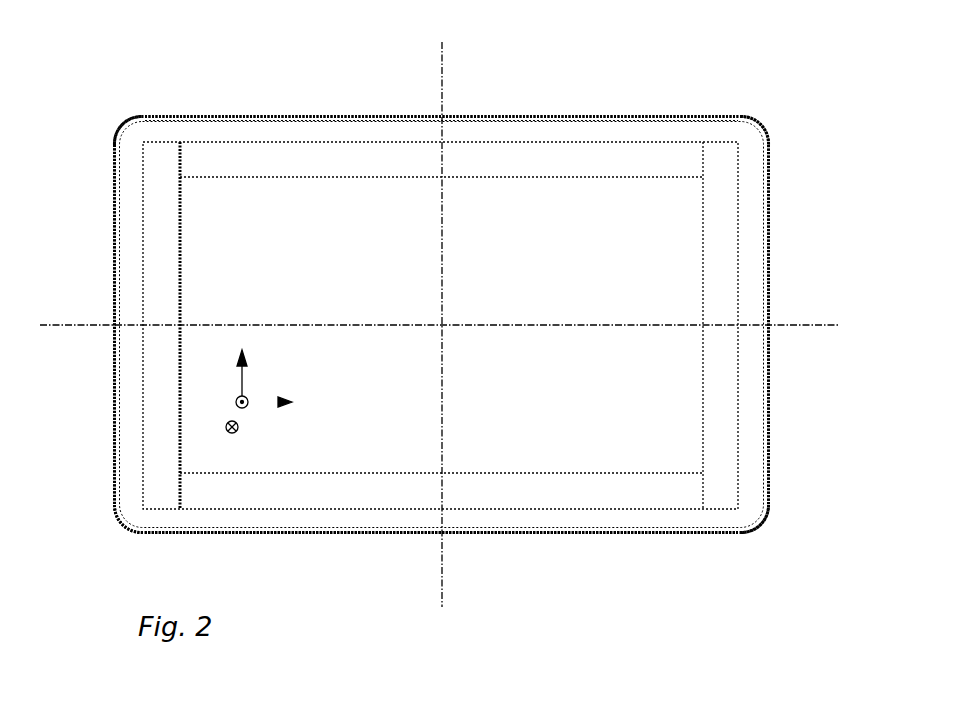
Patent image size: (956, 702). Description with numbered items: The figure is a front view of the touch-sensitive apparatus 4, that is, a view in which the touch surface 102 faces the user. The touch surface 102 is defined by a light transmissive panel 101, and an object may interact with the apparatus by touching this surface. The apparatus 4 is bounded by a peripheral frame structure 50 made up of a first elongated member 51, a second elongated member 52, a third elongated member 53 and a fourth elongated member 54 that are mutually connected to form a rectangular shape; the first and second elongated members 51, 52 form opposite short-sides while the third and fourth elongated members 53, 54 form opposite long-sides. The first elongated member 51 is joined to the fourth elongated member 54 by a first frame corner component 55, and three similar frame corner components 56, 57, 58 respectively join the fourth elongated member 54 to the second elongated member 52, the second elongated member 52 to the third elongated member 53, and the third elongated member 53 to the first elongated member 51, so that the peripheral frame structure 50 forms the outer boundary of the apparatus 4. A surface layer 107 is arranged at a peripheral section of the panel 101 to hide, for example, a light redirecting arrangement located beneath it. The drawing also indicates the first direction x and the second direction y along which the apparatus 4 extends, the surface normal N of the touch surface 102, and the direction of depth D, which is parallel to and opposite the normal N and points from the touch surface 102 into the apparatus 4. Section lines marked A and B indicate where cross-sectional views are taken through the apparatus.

The touch-sensitive apparatus 4 is at (757, 62).
The peripheral frame structure 50 is at (687, 92).
The first elongated member 51 is at (770, 222).
The second elongated member 52 is at (112, 218).
The third elongated member 53 is at (267, 113).
The fourth elongated member 54 is at (575, 536).
The first frame corner component 55 is at (770, 515).
The frame corner component 56 is at (120, 528).
The frame corner component 57 is at (117, 122).
The frame corner component 58 is at (765, 120).
The light transmissive panel 101 is at (570, 248).
The touch surface 102 is at (440, 325).
The surface layer 107 is at (402, 157).
The surface normal N is at (235, 402).
The direction of depth D is at (227, 430).
The section line A- A is at (52, 338).
The section line B- B is at (487, 64).
The first direction x is at (293, 405).
The second direction y is at (234, 369).